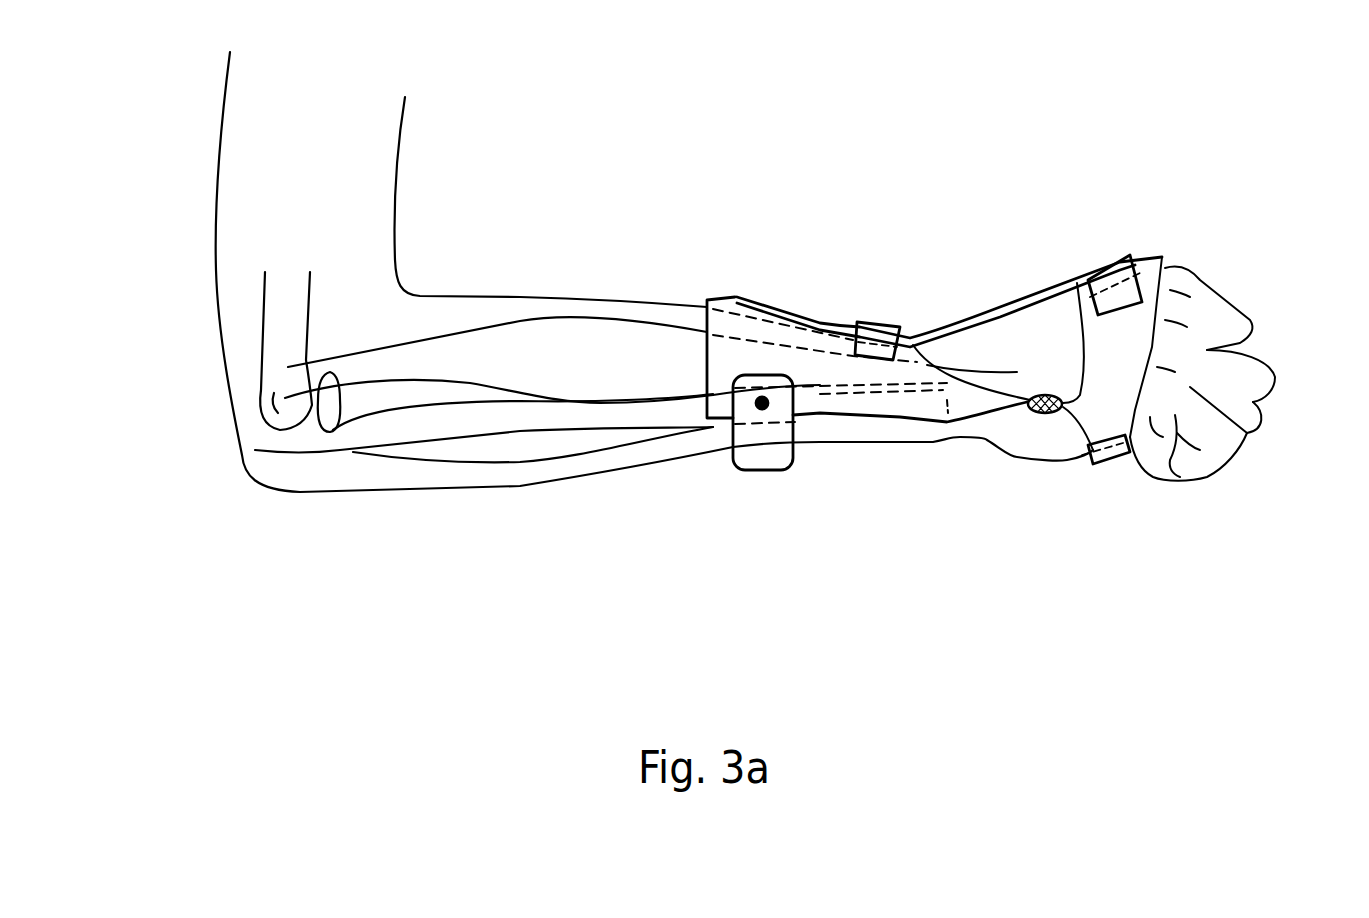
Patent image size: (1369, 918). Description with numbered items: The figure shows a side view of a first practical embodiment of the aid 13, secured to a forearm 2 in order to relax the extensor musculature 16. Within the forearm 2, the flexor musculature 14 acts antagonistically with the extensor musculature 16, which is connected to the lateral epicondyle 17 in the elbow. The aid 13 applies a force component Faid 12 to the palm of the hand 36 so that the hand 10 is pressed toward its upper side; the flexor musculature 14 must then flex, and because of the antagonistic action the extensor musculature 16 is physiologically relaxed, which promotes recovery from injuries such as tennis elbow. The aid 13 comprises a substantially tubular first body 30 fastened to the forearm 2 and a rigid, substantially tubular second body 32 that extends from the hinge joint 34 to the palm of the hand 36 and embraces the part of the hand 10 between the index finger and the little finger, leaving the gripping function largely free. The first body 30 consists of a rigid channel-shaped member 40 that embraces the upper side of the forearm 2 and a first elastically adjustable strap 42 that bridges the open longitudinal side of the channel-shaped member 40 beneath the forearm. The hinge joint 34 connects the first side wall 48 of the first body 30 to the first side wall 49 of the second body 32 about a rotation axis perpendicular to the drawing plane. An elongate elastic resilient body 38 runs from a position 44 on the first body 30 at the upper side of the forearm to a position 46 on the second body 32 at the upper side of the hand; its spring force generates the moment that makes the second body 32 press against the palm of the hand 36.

The forearm 2 is at (484, 170).
The hand 10 is at (1180, 353).
The force component Faid 12 is at (1107, 260).
The aid 13 is at (763, 255).
The flexor musculature 14 is at (508, 448).
The extensor musculature 16 is at (525, 343).
The lateral epicondyle 17 is at (263, 392).
The first body 30 is at (713, 395).
The second body 32 is at (1157, 340).
The hinge joint 34 is at (1040, 413).
The palm of the hand 36 is at (1122, 455).
The resilient body 38 is at (969, 320).
The channel-shaped member 40 is at (825, 420).
The first elastically adjustable strap 42 is at (755, 470).
The attachment position on first body 44 is at (876, 322).
The attachment position on second body 46 is at (1128, 255).
The first side wall of first body 48 is at (965, 403).
The first side wall of second body 49 is at (1107, 462).